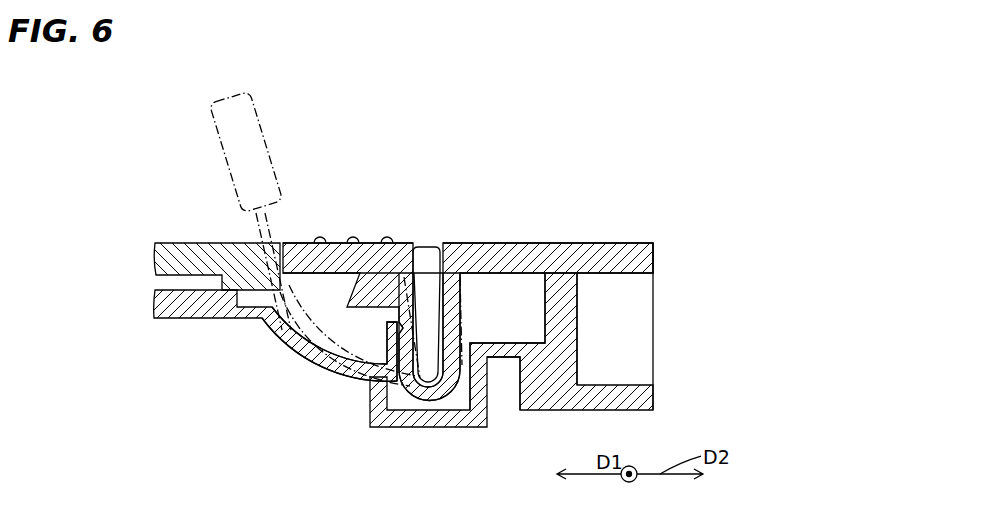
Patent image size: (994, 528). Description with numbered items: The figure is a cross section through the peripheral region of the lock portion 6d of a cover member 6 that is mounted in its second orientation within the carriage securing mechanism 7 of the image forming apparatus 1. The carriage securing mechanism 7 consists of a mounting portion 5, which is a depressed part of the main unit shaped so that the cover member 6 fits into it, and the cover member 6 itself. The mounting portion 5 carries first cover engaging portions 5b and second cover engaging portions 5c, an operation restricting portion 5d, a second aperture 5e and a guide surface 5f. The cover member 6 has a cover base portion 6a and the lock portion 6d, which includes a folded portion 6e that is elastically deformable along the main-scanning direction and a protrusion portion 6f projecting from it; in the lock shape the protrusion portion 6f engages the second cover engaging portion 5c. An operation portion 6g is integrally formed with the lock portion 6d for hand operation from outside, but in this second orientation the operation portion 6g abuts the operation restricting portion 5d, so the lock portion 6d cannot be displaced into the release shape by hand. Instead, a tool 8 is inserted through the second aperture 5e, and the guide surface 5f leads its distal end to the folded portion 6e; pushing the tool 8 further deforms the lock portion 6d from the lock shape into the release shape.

The connector 1 is at (681, 122).
The mounting portion 5 is at (301, 312).
The first cover engaging portion 5b is at (259, 293).
The second cover engaging portion 5c is at (366, 382).
The operation restricting portion 5d is at (423, 244).
The second aperture 5e is at (281, 250).
The guide surface 5f is at (323, 370).
The cover member 6 is at (465, 311).
The cover base portion 6a is at (612, 243).
The lock portion 6d is at (478, 336).
The folded portion 6e is at (428, 390).
The protrusion portion 6f is at (402, 336).
The operation portion 6g is at (353, 238).
The carriage securing mechanism 7 is at (662, 176).
The tool 8 is at (229, 150).